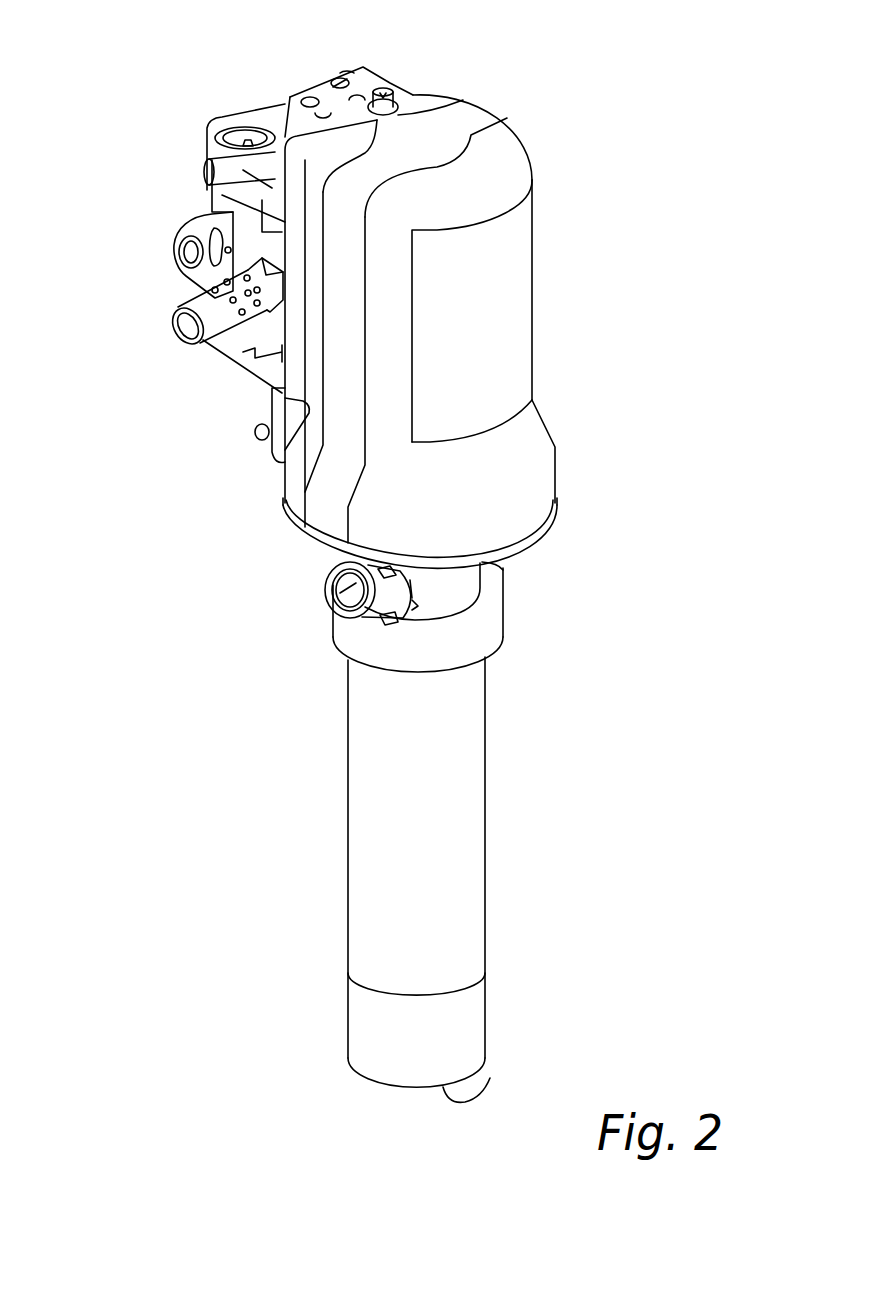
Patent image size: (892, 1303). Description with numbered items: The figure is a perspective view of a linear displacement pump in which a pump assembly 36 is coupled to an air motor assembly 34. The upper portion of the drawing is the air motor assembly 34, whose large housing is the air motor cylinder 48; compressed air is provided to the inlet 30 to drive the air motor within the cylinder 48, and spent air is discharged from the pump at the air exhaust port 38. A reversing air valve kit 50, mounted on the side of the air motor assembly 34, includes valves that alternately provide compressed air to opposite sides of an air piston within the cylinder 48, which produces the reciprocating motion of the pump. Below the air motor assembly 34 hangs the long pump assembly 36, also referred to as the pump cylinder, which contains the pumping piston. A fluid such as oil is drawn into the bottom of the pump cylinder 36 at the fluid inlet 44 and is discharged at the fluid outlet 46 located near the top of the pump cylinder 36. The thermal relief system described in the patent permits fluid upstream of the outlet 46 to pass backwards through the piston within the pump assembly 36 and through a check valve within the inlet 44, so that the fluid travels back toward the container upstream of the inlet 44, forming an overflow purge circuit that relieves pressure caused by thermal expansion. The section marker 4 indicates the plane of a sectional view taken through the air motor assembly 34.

The section line 4- 4 is at (340, 83).
The inlet 30 is at (192, 258).
The air motor assembly 34 is at (527, 143).
The pump assembly 36 is at (436, 830).
The air exhaust port 38 is at (177, 329).
The fluid inlet 44 is at (490, 1078).
The fluid outlet 46 is at (358, 598).
The air motor cylinder 48 is at (493, 319).
The reversing air valve kit 50 is at (191, 213).